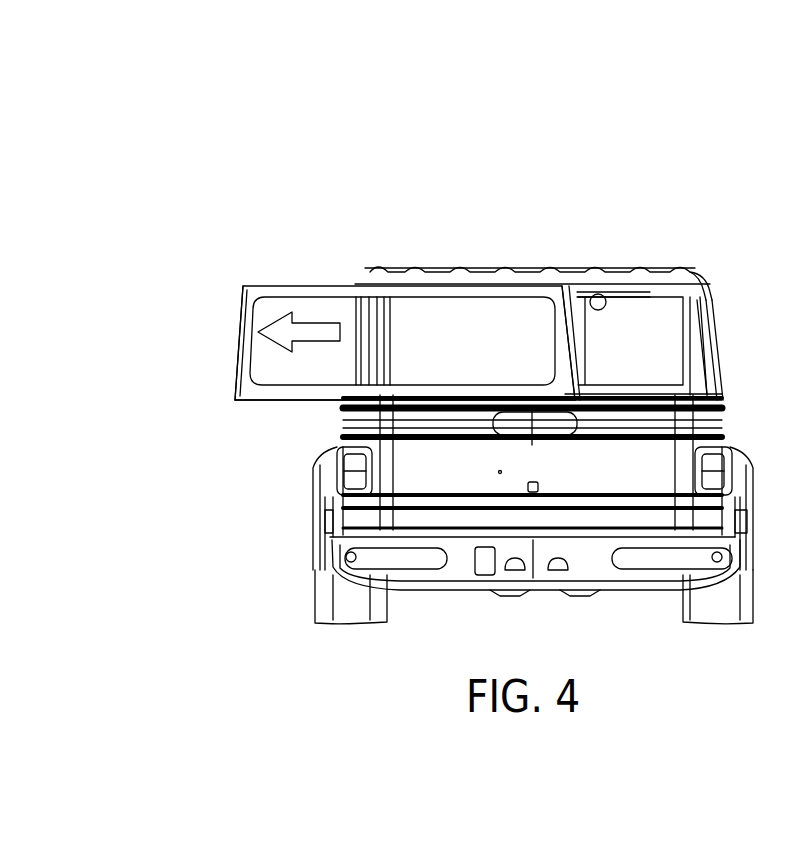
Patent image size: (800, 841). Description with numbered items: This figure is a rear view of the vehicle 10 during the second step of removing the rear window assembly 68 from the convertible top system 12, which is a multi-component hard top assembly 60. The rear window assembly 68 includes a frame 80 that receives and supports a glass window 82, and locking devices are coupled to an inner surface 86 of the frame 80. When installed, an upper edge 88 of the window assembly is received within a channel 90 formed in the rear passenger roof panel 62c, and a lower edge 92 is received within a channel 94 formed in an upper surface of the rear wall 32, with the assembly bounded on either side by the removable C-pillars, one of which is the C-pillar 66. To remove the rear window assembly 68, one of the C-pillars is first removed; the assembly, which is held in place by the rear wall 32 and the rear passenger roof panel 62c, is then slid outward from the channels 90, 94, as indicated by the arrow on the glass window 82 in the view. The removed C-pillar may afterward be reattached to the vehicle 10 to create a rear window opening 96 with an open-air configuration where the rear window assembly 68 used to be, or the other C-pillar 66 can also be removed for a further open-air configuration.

The vehicle 10 is at (670, 117).
The convertible top system 12 is at (710, 269).
The multi-component hard top assembly 60 is at (715, 265).
The rear wall 32 is at (693, 415).
The rear passenger roof panel 62c is at (517, 268).
The C-pillar 66 is at (703, 362).
The rear window assembly 68 is at (281, 279).
The frame 80 is at (243, 402).
The glass window 82 is at (295, 367).
The inner surface 86 is at (307, 300).
The upper edge 88 is at (352, 287).
The channel 90 is at (610, 293).
The lower edge 92 is at (314, 402).
The channel 94 is at (665, 405).
The rear window opening 96 is at (653, 343).